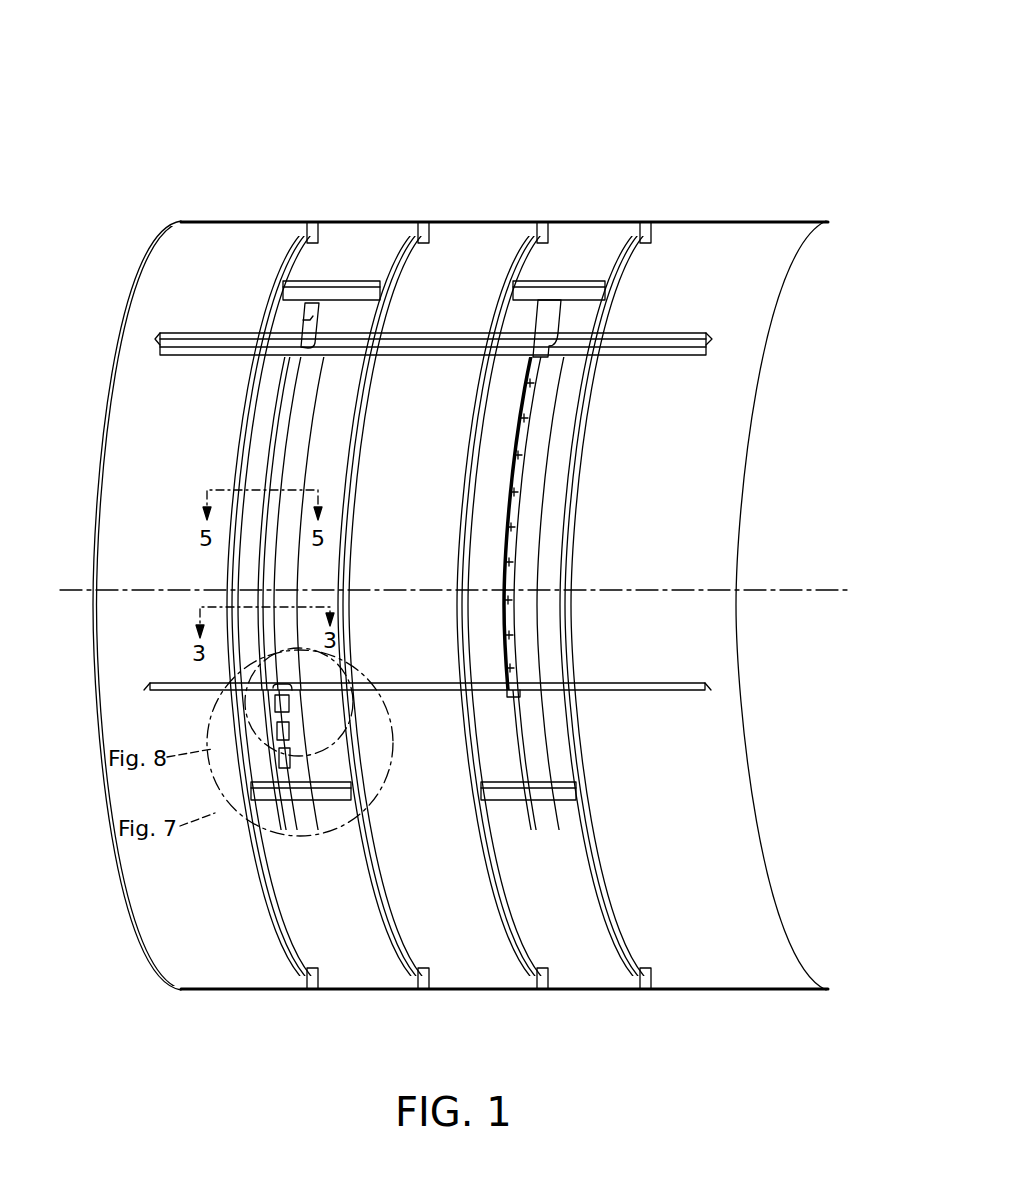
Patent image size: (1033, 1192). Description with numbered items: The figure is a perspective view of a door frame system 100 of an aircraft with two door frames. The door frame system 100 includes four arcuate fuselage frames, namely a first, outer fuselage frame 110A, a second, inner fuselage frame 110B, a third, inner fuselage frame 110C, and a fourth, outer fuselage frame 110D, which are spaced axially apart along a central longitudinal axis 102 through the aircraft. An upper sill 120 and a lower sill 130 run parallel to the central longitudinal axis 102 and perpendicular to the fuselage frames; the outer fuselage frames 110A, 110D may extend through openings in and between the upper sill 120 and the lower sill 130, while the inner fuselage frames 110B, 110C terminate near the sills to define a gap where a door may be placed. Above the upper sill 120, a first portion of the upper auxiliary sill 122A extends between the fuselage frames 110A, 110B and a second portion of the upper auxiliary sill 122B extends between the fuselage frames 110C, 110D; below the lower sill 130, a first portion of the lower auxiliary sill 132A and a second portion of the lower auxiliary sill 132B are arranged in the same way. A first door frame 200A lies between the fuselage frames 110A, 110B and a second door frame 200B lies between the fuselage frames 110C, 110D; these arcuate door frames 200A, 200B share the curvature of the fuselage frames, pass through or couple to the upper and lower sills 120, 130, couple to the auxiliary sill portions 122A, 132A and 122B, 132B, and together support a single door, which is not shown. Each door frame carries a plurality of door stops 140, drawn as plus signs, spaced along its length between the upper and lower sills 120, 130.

The door frame system 100 is at (136, 188).
The central longitudinal axis 102 is at (768, 588).
The first, outer fuselage frame 110A is at (303, 235).
The second, inner fuselage frame 110B is at (413, 235).
The third, inner fuselage frame 110C is at (532, 235).
The fourth, outer fuselage frame 110D is at (665, 235).
The upper sill 120 is at (180, 345).
The first portion of the upper auxiliary sill 122A is at (342, 290).
The second portion of the upper auxiliary sill 122B is at (578, 290).
The lower sill 130 is at (160, 683).
The first portion of the lower auxiliary sill 132A is at (300, 800).
The second portion of the lower auxiliary sill 132B is at (522, 800).
The door stops 140 is at (531, 385).
The first door frame 200A is at (300, 454).
The second door frame 200B is at (527, 562).